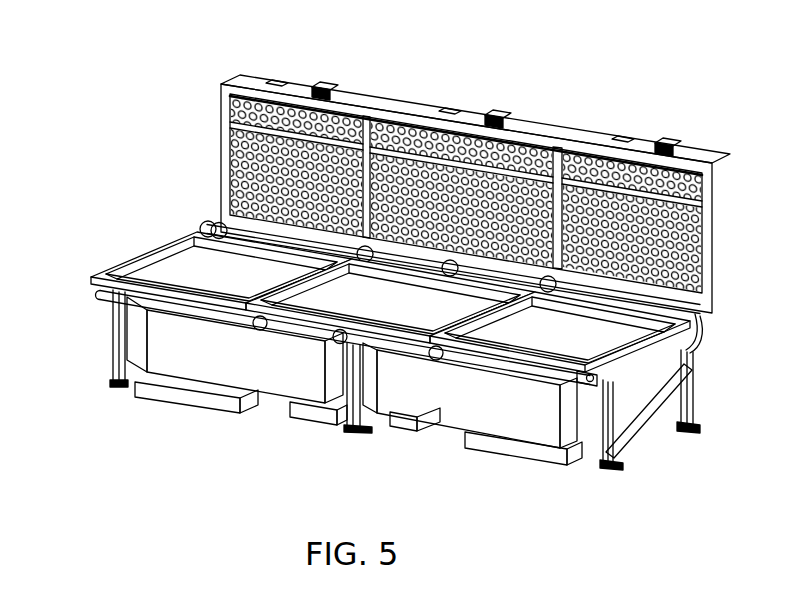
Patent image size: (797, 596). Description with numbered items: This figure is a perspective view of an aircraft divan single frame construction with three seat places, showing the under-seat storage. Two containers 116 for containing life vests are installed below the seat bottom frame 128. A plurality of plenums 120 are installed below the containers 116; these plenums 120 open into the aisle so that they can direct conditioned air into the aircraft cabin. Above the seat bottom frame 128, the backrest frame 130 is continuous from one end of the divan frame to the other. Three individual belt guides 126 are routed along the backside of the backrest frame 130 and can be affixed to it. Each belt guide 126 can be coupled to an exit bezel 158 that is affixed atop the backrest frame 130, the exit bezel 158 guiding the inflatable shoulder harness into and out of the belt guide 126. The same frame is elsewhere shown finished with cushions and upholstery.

The container 116 is at (257, 374).
The plenum 120 is at (178, 392).
The belt guide 126 is at (362, 104).
The seat bottom frame 128 is at (667, 360).
The backrest frame 130 is at (683, 233).
The exit bezel 158 is at (322, 82).